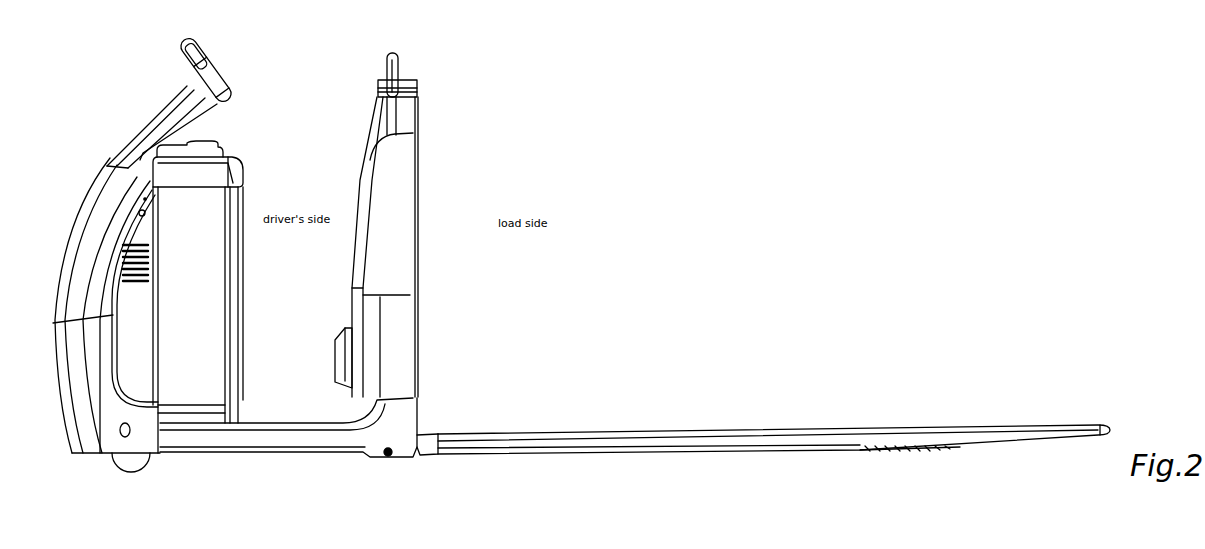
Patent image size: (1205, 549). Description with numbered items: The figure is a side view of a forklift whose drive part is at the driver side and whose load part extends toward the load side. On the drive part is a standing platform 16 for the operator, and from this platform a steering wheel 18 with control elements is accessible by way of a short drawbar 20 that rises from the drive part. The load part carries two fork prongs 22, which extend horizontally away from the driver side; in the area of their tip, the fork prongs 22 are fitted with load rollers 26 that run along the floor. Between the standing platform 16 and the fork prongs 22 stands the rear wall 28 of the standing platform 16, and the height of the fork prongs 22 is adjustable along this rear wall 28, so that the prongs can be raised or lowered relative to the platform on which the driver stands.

The standing platform 16 is at (580, 263).
The steering wheel 18 is at (225, 58).
The drawbar 20 is at (140, 138).
The fork prongs 22 is at (625, 443).
The load rollers 26 is at (960, 450).
The rear wall 28 is at (392, 215).